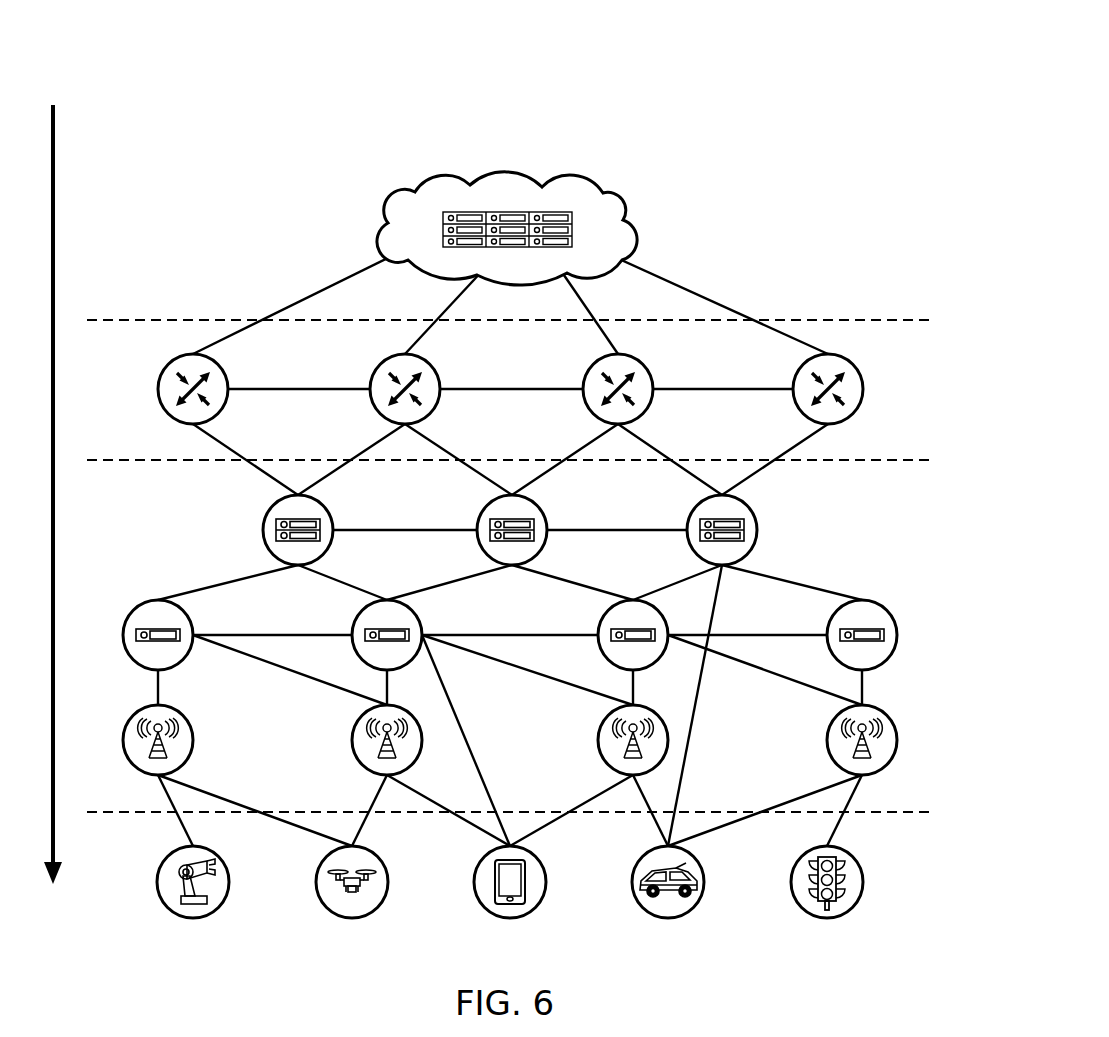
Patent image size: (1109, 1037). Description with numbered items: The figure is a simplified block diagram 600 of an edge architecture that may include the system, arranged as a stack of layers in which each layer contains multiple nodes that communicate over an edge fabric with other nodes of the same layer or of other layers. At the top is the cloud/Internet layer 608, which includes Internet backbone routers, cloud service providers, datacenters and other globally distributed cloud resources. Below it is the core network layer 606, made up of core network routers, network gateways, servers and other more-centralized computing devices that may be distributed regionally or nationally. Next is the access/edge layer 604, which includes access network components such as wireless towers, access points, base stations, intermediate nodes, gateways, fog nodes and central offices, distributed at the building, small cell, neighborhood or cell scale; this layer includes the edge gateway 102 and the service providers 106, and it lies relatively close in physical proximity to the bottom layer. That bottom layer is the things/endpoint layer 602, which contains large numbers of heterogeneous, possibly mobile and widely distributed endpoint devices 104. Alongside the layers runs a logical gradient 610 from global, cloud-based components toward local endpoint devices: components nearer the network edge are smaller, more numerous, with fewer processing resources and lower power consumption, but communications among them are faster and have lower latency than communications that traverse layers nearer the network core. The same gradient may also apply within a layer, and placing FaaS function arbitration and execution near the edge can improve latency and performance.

The diagram 600 is at (917, 85).
The logical gradient 610 is at (55, 148).
The cloud/Internet layer 608 is at (119, 240).
The core network layer 606 is at (119, 380).
The access/edge layer 604 is at (119, 520).
The edge gateway 102 is at (545, 567).
The service providers 106 is at (922, 548).
The things/endpoint layer 602 is at (107, 870).
The endpoint devices 104 is at (893, 912).